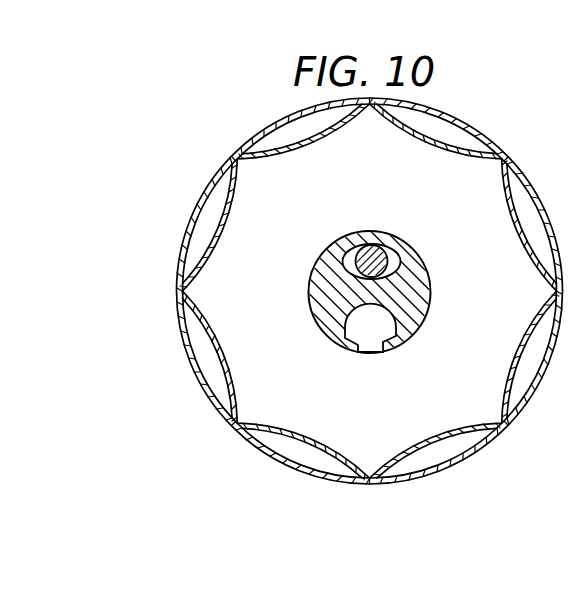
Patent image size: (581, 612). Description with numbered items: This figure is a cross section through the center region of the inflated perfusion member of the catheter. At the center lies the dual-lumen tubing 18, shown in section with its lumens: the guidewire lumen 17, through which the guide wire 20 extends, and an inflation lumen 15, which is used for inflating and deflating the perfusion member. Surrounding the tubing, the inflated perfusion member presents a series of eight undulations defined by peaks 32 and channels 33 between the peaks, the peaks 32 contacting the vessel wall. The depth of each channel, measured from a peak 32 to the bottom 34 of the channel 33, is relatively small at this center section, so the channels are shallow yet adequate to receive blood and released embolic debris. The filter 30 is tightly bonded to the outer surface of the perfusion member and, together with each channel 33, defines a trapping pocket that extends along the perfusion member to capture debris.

The inflation lumen 15 is at (377, 326).
The guidewire lumen 17 is at (393, 252).
The dual-lumen tubing 18 is at (417, 300).
The guide wire 20 is at (360, 246).
The filter 30 is at (214, 181).
The peaks 32 is at (507, 160).
The channels 33 is at (413, 140).
The bottom of channel 34 is at (436, 134).